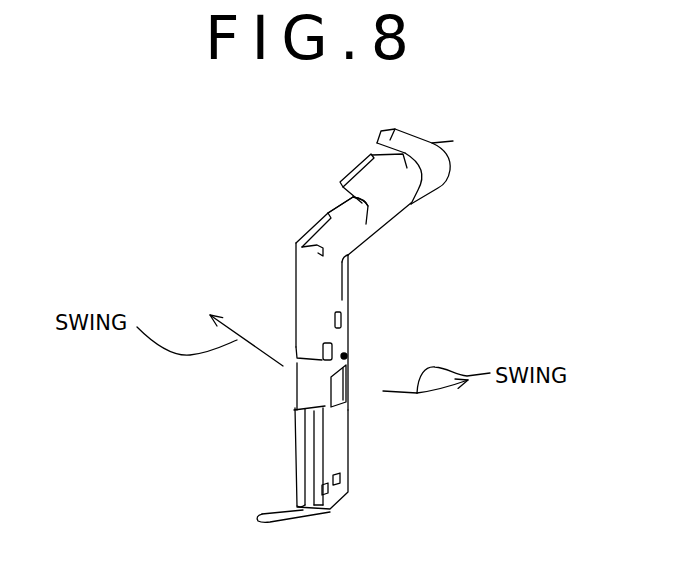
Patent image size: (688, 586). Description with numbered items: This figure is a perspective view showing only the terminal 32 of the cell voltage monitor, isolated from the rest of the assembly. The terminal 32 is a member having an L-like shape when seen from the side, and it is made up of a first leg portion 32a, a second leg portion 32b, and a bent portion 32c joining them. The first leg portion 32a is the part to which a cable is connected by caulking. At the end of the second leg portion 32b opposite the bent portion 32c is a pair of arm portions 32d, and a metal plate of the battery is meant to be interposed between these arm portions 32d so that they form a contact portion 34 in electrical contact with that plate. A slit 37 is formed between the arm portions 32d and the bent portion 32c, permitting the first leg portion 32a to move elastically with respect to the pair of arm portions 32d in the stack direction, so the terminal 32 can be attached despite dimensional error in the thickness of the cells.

The terminal 32 is at (292, 264).
The first leg portion 32a is at (397, 201).
The second leg portion 32b is at (349, 363).
The bent portion 32c is at (352, 249).
The arm portions 32d is at (262, 514).
The contact portion 34 is at (330, 463).
The slit 37 is at (343, 328).